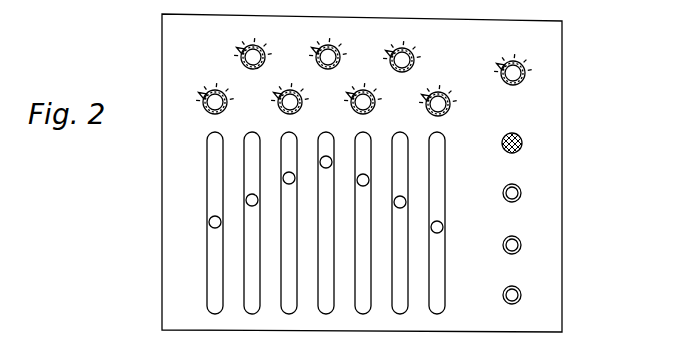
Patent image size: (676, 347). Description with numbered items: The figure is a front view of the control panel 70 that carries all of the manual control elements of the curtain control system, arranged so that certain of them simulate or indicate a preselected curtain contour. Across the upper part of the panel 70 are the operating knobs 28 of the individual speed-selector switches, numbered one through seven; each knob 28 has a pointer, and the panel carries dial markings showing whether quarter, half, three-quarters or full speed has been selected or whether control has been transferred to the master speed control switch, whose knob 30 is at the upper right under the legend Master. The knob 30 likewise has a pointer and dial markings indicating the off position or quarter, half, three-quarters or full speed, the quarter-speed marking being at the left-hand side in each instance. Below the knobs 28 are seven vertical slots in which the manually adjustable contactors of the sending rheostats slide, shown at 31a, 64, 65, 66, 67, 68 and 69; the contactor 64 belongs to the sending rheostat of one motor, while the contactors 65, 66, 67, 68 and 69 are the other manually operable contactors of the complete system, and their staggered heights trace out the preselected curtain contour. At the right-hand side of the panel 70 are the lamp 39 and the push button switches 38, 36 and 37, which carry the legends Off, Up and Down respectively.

The panel 70 is at (556, 108).
The operating knobs 28 is at (253, 70).
The knob of master speed control switch 30 is at (525, 75).
The lamp 39 is at (523, 143).
The push button switch 38 is at (522, 193).
The push button switch 36 is at (522, 245).
The push button switch 37 is at (522, 295).
The slider knob 31a is at (209, 223).
The manually adjustable contactor 64 is at (247, 204).
The manually operable contactor 65 is at (284, 182).
The manually operable contactor 66 is at (321, 165).
The manually operable contactor 67 is at (358, 183).
The manually operable contactor 68 is at (395, 205).
The manually operable contactor 69 is at (432, 230).